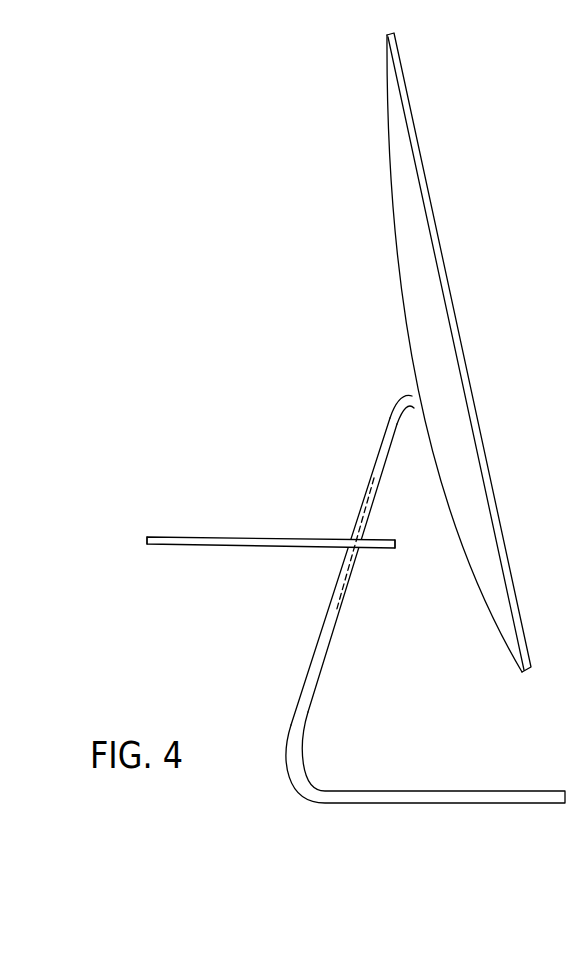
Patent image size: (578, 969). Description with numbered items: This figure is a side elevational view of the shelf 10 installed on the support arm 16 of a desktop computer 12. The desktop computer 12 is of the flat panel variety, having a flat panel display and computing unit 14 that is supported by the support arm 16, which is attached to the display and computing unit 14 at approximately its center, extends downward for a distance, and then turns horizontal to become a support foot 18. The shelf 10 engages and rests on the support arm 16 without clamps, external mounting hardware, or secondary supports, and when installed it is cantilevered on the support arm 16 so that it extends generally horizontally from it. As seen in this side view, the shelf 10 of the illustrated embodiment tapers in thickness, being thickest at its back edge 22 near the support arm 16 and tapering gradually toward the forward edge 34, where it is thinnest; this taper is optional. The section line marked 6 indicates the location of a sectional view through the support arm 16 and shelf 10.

The shelf 10 is at (267, 517).
The desktop computer 12 is at (430, 352).
The flat panel display and computing unit 14 is at (410, 311).
The support arm 16 is at (388, 423).
The support foot 18 is at (530, 790).
The back edge 22 is at (395, 544).
The forward edge 34 is at (147, 541).
The section line 6- 6 is at (378, 480).